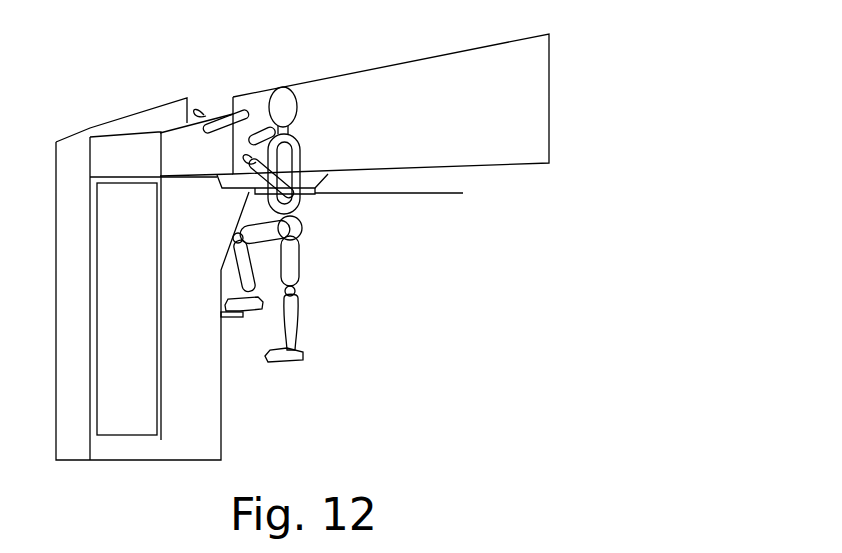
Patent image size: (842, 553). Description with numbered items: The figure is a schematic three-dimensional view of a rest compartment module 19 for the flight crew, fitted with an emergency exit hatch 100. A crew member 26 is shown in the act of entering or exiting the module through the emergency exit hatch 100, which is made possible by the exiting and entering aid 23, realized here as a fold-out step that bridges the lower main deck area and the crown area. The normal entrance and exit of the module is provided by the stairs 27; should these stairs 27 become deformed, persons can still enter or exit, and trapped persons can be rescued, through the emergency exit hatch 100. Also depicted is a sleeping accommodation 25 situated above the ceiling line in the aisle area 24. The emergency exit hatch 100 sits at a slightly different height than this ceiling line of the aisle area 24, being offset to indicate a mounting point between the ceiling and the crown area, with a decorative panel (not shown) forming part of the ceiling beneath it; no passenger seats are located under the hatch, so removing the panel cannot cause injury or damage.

The rest compartment module 19 is at (597, 75).
The exiting and entering aid 23 is at (226, 320).
The aisle area 24 is at (420, 194).
The sleeping accommodation 25 is at (530, 134).
The crew member 26 is at (300, 328).
The stairs 27 is at (122, 156).
The emergency exit hatch 100 is at (312, 202).